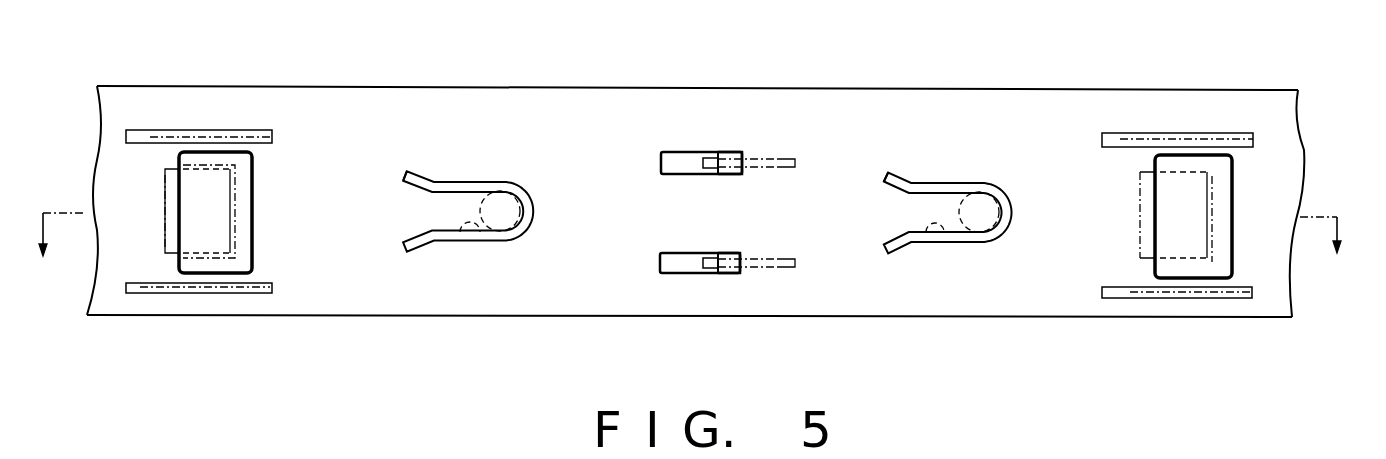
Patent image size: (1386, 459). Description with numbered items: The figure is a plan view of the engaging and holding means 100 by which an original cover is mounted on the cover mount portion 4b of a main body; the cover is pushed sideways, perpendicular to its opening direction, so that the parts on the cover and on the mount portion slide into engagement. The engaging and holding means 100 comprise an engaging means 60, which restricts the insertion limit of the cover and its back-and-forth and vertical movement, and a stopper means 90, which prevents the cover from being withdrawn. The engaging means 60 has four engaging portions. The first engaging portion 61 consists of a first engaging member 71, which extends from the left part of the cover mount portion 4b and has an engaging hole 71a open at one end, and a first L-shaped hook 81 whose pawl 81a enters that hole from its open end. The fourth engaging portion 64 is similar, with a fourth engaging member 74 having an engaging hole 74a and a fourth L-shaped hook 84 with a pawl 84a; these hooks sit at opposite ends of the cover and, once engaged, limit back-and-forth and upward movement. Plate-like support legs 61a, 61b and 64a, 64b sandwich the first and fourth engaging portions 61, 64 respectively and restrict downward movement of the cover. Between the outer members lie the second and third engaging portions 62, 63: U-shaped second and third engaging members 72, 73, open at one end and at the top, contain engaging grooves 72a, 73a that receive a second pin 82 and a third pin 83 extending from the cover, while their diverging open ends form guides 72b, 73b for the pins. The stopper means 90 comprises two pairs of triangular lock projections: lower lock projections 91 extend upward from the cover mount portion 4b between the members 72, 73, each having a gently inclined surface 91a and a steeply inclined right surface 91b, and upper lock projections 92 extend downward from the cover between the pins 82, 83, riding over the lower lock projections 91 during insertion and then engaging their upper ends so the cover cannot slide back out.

The engaging and holding means 100 is at (120, 170).
The cover mount portion 4b is at (603, 100).
The engaging means 60 is at (430, 272).
The first engaging portion 61 is at (218, 143).
The support leg 61a is at (145, 287).
The support leg 61b is at (153, 128).
The second engaging portion 62 is at (466, 170).
The third engaging portion 63 is at (935, 177).
The fourth engaging portion 64 is at (1192, 152).
The support leg 64a is at (1138, 293).
The support leg 64b is at (1120, 135).
The first engaging member 71 is at (222, 265).
The engaging hole 71a is at (233, 223).
The second engaging member 72 is at (534, 215).
The engaging groove 72a is at (480, 232).
The guide 72b is at (418, 177).
The third engaging member 73 is at (992, 237).
The engaging groove 73a is at (942, 228).
The guide 73b is at (897, 177).
The fourth engaging member 74 is at (1217, 272).
The engaging hole 74a is at (1215, 187).
The first L-shaped hook 81 is at (173, 192).
The pawl 81a is at (222, 193).
The second pin 82 is at (500, 203).
The third pin 83 is at (977, 212).
The fourth L-shaped hook 84 is at (1143, 203).
The pawl 84a is at (1188, 230).
The stopper means 90 is at (705, 143).
The lower lock projection 91 is at (682, 172).
The inclined surface 91a is at (692, 258).
The right inclined surface 91b is at (722, 275).
The upper lock projection 92 is at (753, 157).